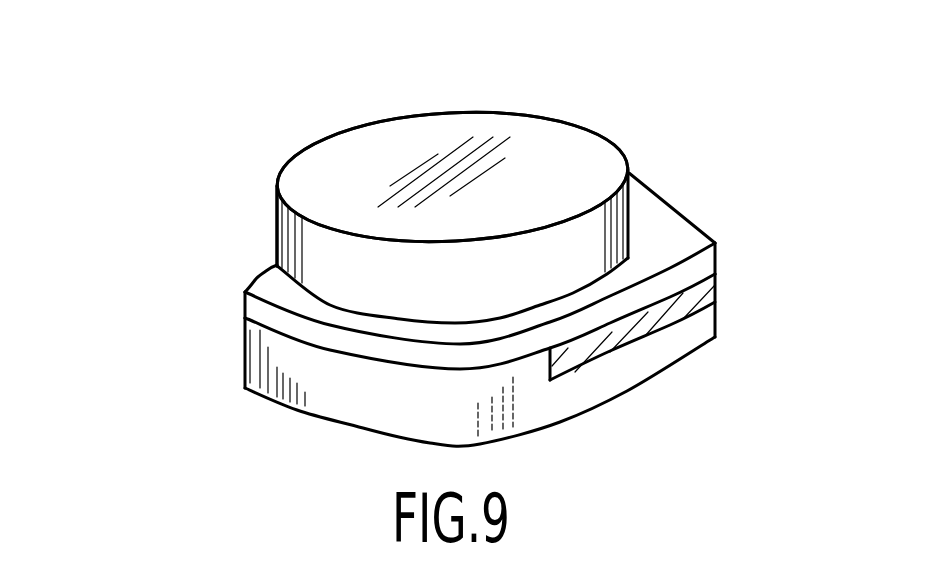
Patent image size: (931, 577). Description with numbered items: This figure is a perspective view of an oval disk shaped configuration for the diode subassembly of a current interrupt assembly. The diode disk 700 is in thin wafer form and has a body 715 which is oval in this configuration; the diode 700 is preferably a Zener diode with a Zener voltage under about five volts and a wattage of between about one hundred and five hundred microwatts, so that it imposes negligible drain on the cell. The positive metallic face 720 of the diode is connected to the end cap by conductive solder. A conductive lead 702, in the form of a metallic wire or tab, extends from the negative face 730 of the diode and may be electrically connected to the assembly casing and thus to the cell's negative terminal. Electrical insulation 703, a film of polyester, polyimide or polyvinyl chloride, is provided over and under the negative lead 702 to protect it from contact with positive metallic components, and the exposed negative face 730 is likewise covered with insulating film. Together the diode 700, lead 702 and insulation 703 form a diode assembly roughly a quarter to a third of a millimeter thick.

The diode disk 700 is at (477, 124).
The conductive lead 702 is at (714, 281).
The electrical insulation 703 is at (252, 308).
The body 715 is at (290, 228).
The positive metallic face 720 is at (323, 148).
The negative face 730 is at (280, 278).